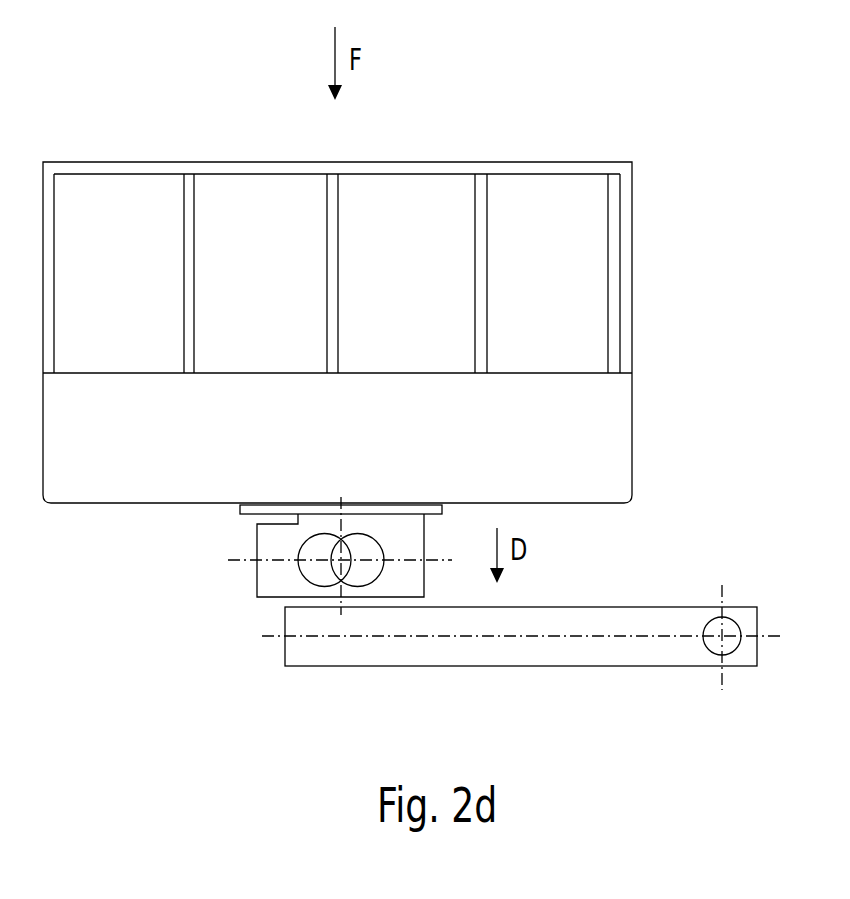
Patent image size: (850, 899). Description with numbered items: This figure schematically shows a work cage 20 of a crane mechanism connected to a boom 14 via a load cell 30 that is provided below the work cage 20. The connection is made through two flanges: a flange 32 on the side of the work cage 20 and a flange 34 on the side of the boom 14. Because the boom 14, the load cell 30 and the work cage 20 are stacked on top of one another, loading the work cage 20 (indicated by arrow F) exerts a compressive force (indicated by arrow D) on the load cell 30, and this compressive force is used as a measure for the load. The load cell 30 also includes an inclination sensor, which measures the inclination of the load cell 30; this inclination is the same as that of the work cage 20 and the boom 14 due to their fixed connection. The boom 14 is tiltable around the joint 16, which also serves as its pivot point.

The work cage 20 is at (541, 168).
The flange 32 is at (403, 505).
The load cell 30 is at (257, 574).
The flange 34 is at (355, 602).
The boom 14 is at (618, 653).
The joint 16 is at (722, 630).